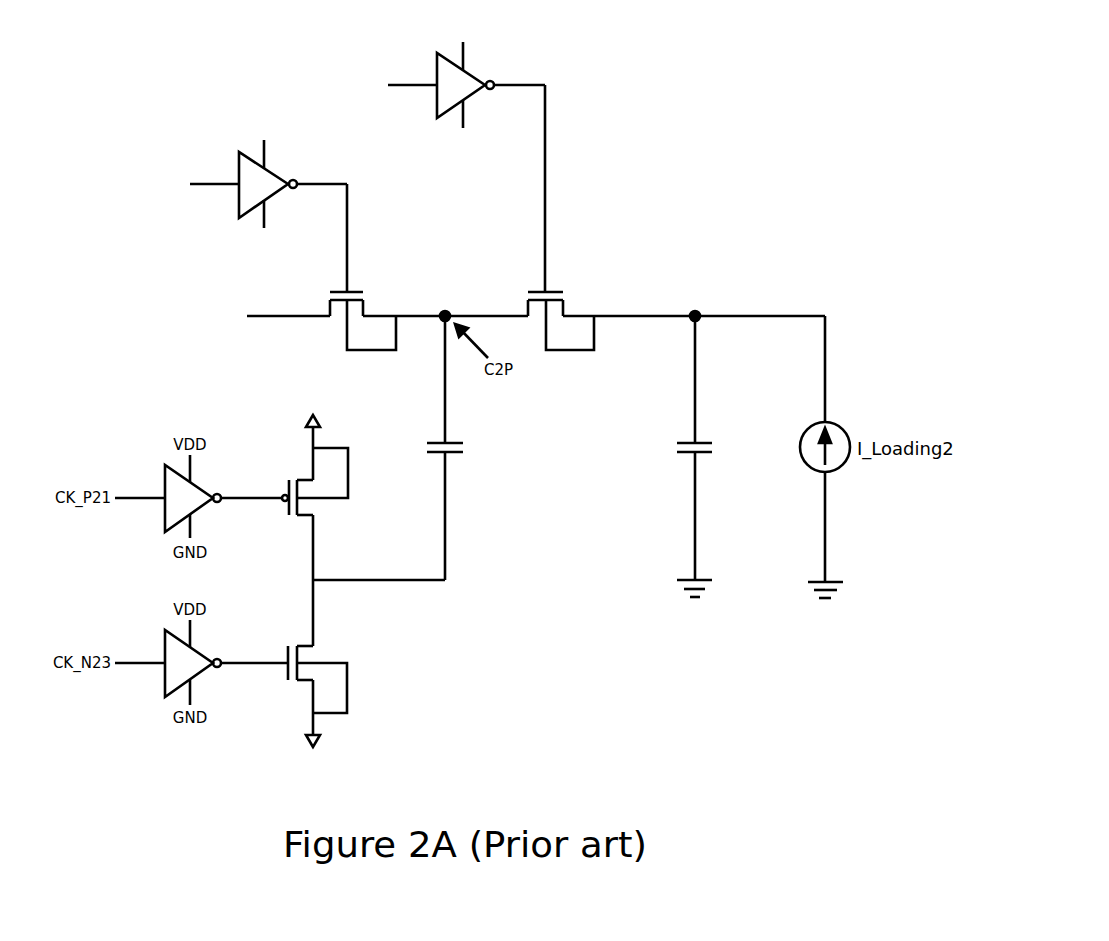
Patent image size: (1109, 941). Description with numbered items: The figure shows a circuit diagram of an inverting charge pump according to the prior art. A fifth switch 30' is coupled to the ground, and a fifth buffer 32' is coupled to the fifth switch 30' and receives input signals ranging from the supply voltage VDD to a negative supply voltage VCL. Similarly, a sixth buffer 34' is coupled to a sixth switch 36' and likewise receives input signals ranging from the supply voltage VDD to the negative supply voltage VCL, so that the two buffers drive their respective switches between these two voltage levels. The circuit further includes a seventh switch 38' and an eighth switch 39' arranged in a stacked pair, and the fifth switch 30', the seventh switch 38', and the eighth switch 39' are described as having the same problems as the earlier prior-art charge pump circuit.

The fifth switch 30' is at (334, 310).
The fifth buffer 32' is at (247, 207).
The sixth buffer 34' is at (445, 158).
The sixth switch 36' is at (635, 310).
The seventh switch 38' is at (363, 488).
The eighth switch 39' is at (366, 674).